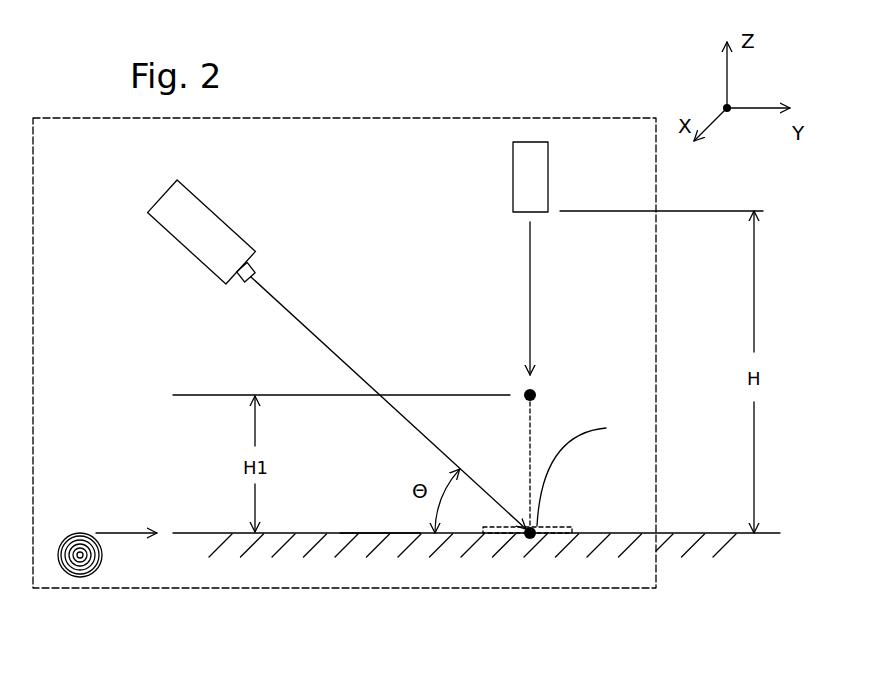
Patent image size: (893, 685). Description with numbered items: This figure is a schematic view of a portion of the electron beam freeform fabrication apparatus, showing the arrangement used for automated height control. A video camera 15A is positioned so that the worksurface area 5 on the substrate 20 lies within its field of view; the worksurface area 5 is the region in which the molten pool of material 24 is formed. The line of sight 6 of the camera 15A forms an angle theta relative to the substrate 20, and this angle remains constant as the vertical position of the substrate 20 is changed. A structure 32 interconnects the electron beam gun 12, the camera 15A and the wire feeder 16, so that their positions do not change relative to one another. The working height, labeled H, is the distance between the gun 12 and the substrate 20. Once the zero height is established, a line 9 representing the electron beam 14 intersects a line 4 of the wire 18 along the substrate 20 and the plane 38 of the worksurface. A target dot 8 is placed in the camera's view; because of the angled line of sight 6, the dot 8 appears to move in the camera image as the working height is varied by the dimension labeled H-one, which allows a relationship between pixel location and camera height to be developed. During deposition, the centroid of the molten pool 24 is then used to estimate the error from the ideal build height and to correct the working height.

The line of wire 4 is at (358, 533).
The worksurface area 5 is at (547, 507).
The line of sight 6 is at (317, 340).
The target dot 8 is at (581, 471).
The line representing the electron beam 9 is at (533, 440).
The electron beam gun 12 is at (548, 152).
The electron beam 14 is at (530, 285).
The video camera 15A is at (203, 213).
The wire feeder 16 is at (64, 540).
The wire 18 is at (122, 533).
The substrate 20 is at (770, 533).
The molten pool of material 24 is at (553, 527).
The structure 32 is at (657, 196).
The plane of worksurface 38 is at (380, 533).